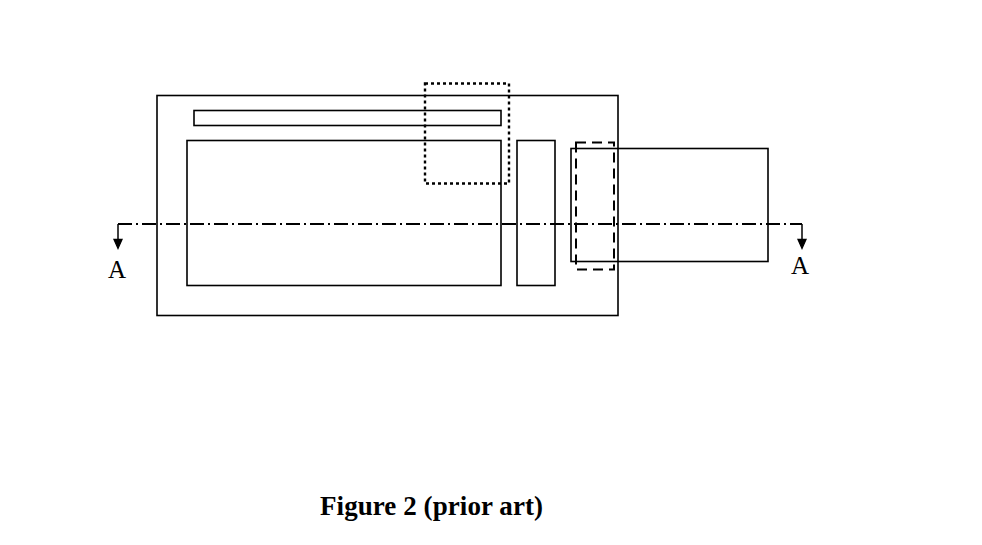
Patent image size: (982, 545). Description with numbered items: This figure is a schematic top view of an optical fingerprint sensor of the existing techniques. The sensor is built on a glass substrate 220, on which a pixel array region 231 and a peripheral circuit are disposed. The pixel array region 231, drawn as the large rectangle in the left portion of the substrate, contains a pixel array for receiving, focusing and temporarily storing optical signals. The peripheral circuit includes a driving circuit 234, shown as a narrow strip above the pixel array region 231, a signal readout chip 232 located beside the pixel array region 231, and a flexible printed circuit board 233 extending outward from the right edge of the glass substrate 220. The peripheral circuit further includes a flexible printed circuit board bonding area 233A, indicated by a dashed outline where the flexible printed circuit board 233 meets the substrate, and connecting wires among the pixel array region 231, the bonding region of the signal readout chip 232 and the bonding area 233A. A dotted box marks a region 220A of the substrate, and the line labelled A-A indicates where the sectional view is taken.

The glass substrate 220 is at (172, 308).
The region of housing 220A is at (508, 83).
The pixel array region 231 is at (272, 270).
The signal readout chip 232 is at (532, 263).
The flexible printed circuit board 233 is at (698, 247).
The flexible printed circuit board bonding area 233A is at (606, 143).
The driving circuit 234 is at (225, 116).